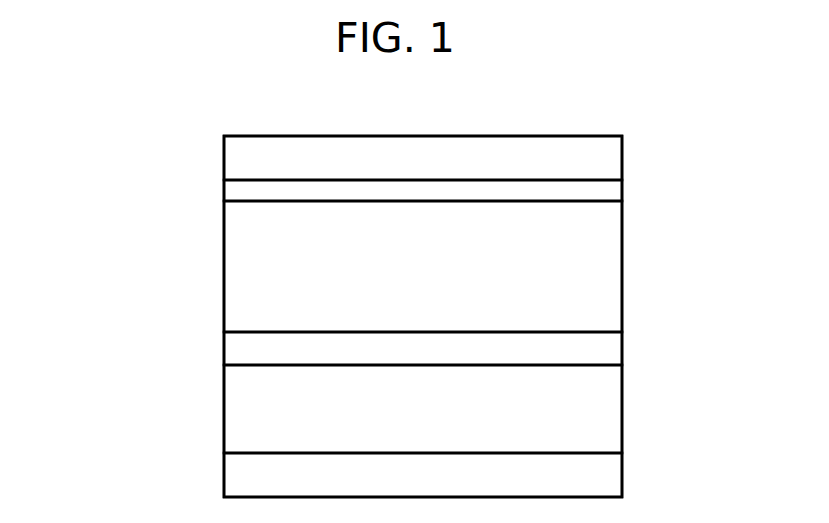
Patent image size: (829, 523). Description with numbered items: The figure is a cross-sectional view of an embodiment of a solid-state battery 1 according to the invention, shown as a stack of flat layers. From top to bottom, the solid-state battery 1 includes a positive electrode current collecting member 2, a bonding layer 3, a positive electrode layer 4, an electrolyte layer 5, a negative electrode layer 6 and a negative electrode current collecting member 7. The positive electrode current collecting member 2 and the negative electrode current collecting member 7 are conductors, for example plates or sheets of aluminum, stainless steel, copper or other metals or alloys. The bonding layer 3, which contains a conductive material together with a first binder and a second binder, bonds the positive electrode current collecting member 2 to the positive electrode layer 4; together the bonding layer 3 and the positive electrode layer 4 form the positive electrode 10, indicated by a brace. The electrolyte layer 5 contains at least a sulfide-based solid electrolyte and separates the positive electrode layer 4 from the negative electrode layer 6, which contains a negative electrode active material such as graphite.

The solid-state battery 1 is at (222, 136).
The positive electrode current collecting member 2 is at (623, 158).
The bonding layer 3 is at (623, 190).
The positive electrode layer 4 is at (623, 267).
The electrolyte layer 5 is at (623, 350).
The negative electrode layer 6 is at (623, 409).
The negative electrode current collecting member 7 is at (623, 476).
The positive electrode 10 is at (692, 187).